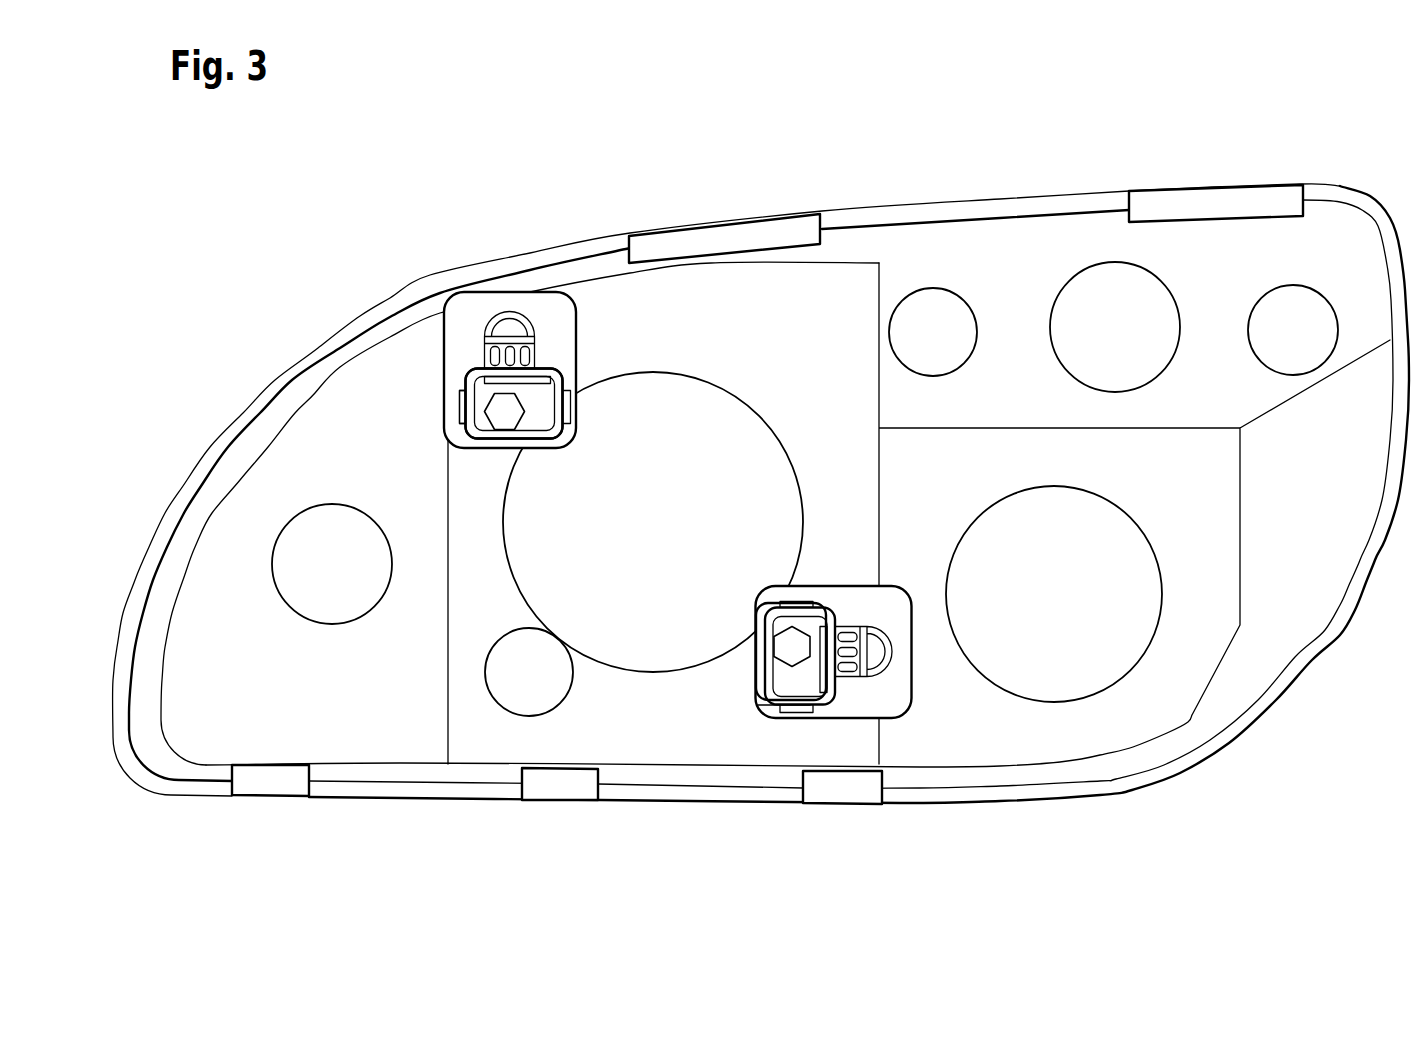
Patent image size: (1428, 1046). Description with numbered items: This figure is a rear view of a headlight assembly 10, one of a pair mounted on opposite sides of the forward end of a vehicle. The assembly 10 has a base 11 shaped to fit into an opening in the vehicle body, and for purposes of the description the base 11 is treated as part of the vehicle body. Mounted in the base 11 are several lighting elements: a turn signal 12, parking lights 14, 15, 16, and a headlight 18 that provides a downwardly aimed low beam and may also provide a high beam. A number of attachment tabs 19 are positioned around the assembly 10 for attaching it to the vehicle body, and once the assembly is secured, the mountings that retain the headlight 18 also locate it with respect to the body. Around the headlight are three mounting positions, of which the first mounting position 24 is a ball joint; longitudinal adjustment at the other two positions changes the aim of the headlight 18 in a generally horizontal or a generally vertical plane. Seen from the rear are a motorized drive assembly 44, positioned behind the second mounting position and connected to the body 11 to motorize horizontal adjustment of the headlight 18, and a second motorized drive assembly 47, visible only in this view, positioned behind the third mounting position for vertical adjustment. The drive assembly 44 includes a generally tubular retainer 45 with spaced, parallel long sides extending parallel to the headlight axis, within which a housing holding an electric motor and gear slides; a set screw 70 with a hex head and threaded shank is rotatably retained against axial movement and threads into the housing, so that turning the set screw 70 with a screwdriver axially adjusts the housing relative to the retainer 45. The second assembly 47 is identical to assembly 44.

The headlight assembly 10 is at (422, 258).
The base 11 is at (862, 200).
The turn signal 12 is at (1080, 705).
The parking light 14 is at (1313, 287).
The parking light 15 is at (1098, 263).
The parking light 16 is at (955, 289).
The headlight 18 is at (651, 366).
The attachment tab 19 is at (726, 236).
The first mounting position 24 is at (492, 712).
The motorized drive assembly 44 is at (801, 722).
The retainer 45 is at (538, 293).
The second motorized drive assembly 47 is at (443, 375).
The set screw 70 is at (487, 419).